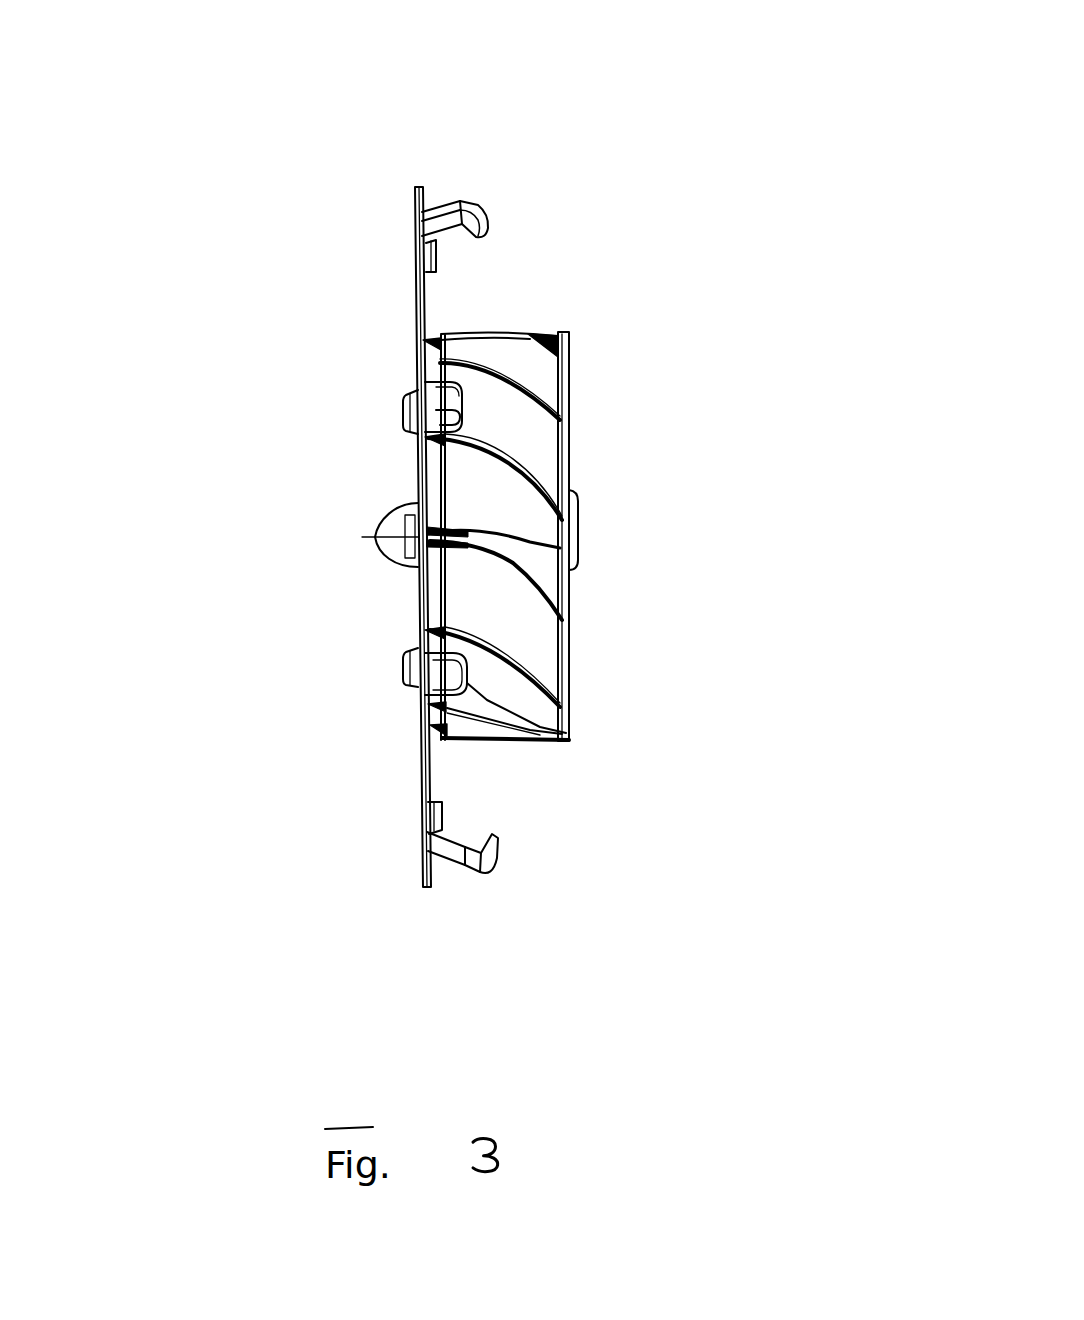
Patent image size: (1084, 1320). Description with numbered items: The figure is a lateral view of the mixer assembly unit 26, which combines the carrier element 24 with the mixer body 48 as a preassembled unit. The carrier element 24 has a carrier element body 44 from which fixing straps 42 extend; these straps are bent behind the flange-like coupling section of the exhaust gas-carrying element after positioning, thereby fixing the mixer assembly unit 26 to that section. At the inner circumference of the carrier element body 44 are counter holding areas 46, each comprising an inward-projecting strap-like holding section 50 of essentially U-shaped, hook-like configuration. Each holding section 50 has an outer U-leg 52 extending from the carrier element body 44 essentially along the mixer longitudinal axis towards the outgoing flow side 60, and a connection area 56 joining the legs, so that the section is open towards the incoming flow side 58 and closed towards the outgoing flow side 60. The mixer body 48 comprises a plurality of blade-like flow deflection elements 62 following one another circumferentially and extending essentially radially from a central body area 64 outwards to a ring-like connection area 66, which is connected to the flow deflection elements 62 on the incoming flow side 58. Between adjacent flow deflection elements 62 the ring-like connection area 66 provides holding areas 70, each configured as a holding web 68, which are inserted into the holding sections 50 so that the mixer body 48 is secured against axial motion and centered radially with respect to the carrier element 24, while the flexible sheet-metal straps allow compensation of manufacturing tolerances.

The mixer assembly unit 26 is at (771, 63).
The carrier element 24 is at (239, 242).
The carrier element body 44 is at (413, 304).
The fixing straps 42 is at (484, 981).
The incoming flow side 58 is at (176, 438).
The holding areas 70 is at (283, 467).
The central body area 64 is at (301, 630).
The holding web 68 is at (410, 660).
The outer U-leg 52 is at (427, 700).
The outgoing flow side 60 is at (835, 305).
The mixer body 48 is at (725, 248).
The ring-like connection area 66 is at (438, 599).
The counter holding areas 46 is at (688, 409).
The flow deflection elements 62 is at (530, 567).
The strap-like holding section 50 is at (700, 617).
The connection area 56 is at (567, 728).